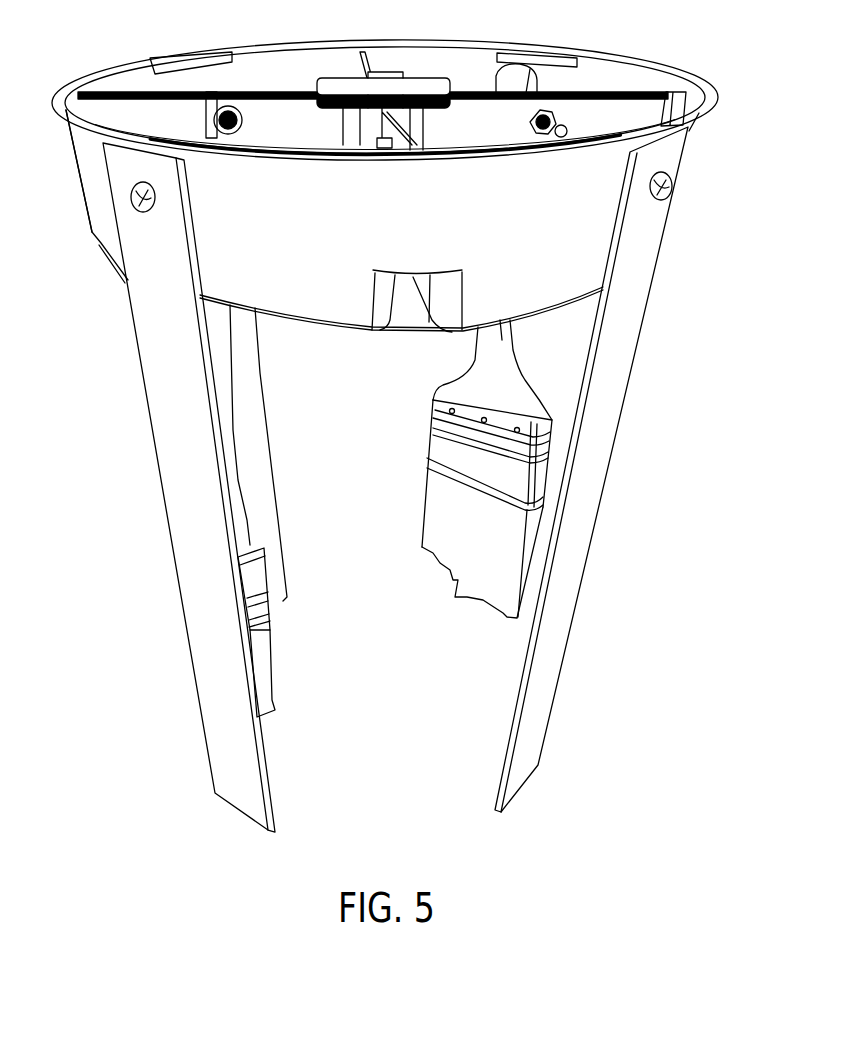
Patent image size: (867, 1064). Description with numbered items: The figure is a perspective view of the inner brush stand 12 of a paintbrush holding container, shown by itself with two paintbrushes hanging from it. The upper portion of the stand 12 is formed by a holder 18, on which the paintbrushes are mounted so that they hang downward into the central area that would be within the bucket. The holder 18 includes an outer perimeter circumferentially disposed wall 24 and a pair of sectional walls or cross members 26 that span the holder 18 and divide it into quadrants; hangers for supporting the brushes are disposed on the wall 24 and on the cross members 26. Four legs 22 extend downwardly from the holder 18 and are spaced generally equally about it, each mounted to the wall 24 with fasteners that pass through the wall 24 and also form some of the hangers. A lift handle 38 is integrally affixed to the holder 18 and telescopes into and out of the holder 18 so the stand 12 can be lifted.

The inner brush stand 12 is at (376, 418).
The holder 18 is at (573, 232).
The legs 22 is at (527, 357).
The outer perimeter circumferentially disposed wall 24 is at (95, 184).
The cross members 26 is at (363, 67).
The lift handle 38 is at (387, 78).